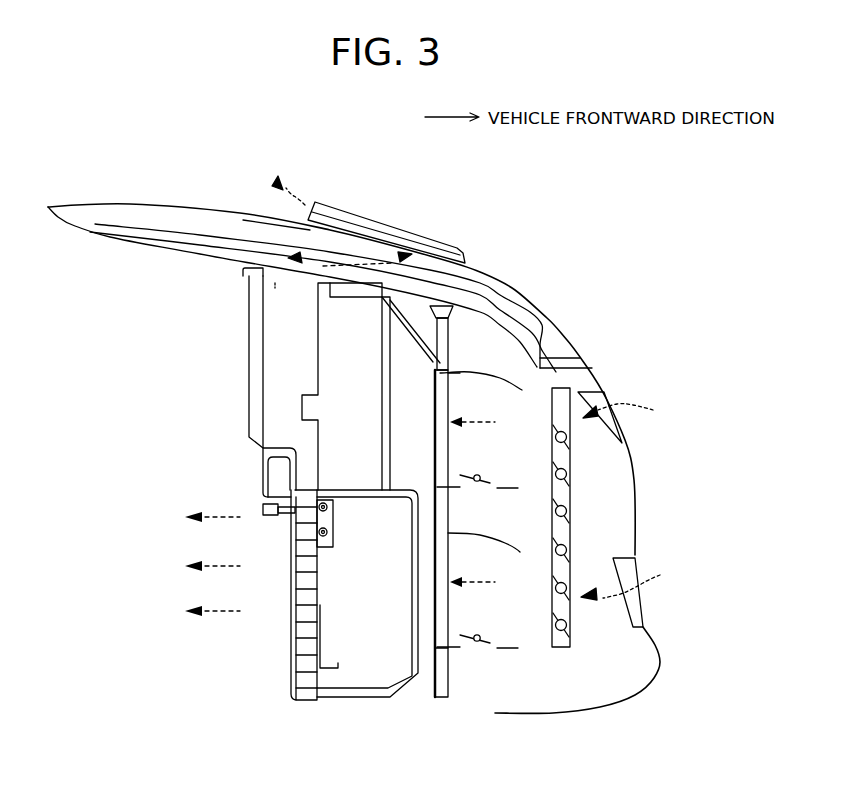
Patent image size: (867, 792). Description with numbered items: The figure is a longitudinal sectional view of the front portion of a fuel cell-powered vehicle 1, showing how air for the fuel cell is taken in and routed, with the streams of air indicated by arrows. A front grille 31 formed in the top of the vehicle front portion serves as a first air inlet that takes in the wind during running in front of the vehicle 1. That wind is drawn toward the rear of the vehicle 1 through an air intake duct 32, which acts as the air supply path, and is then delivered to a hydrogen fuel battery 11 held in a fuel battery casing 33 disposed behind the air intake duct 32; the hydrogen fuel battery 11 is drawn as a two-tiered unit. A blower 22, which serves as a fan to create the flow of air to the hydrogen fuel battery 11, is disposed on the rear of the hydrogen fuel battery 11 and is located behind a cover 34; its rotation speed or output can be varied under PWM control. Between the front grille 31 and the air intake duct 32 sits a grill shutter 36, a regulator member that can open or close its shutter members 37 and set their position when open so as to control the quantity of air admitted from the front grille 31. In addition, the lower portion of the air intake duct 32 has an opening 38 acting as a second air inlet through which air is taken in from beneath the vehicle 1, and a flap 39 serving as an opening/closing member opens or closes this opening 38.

The fuel cell-powered vehicle 1 is at (634, 230).
The hydrogen fuel battery 11 is at (227, 348).
The blower 22 is at (227, 407).
The front grille 31 is at (610, 393).
The air intake duct 32 is at (477, 372).
The fuel battery casing 33 is at (428, 307).
The cover 34 is at (340, 335).
The grill shutter 36 is at (568, 462).
The shutter members 37 is at (573, 523).
The opening 38 is at (474, 674).
The flap 39 is at (480, 480).